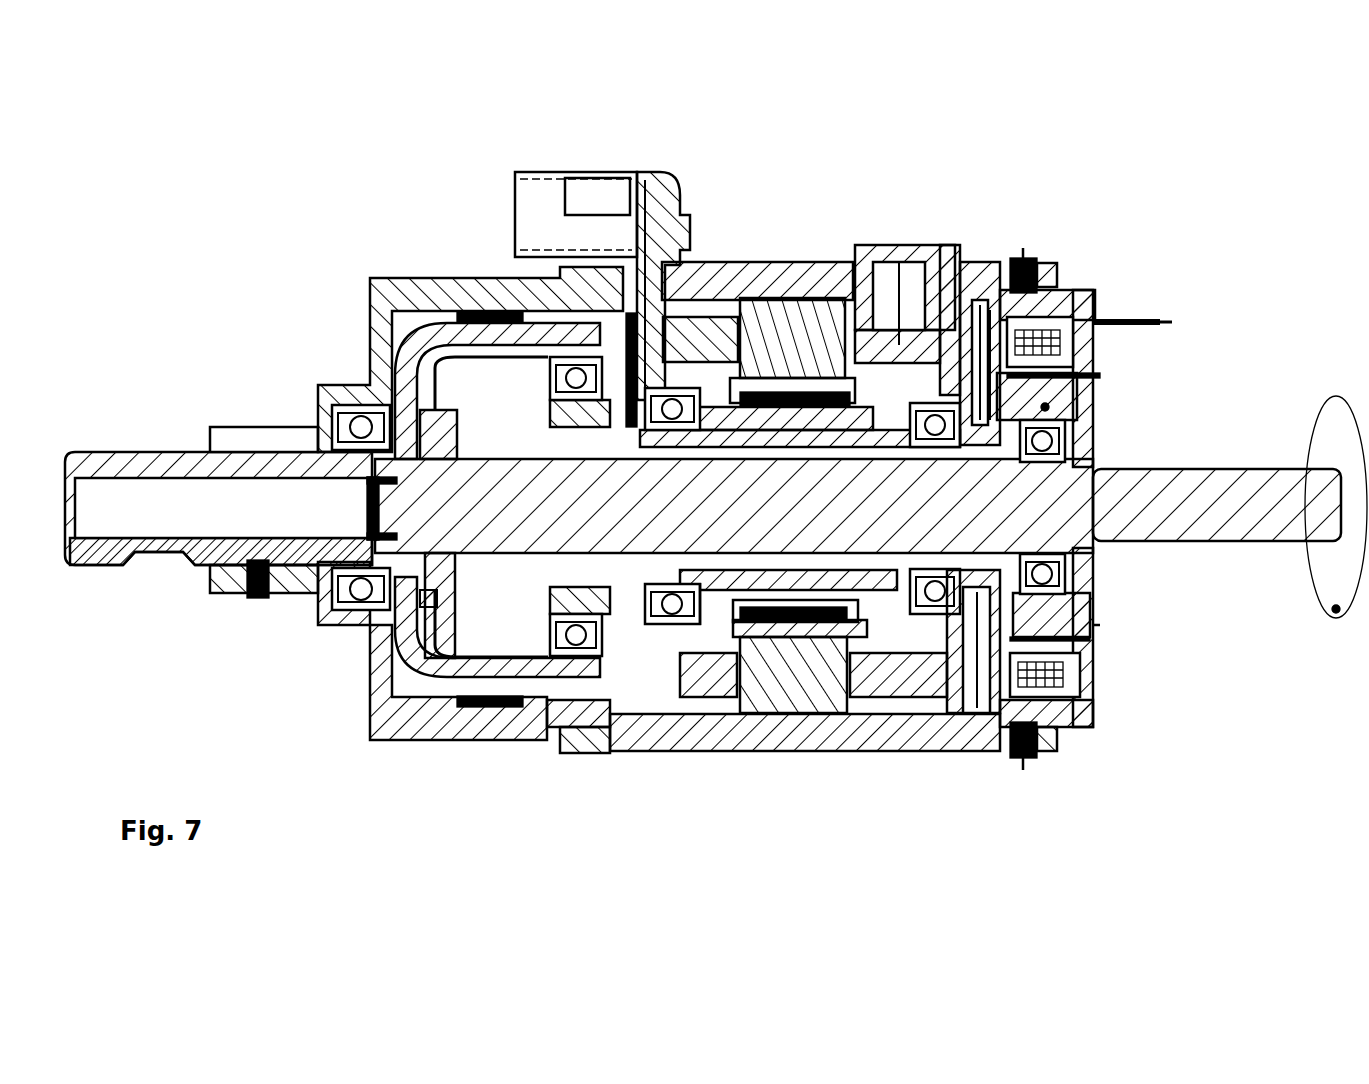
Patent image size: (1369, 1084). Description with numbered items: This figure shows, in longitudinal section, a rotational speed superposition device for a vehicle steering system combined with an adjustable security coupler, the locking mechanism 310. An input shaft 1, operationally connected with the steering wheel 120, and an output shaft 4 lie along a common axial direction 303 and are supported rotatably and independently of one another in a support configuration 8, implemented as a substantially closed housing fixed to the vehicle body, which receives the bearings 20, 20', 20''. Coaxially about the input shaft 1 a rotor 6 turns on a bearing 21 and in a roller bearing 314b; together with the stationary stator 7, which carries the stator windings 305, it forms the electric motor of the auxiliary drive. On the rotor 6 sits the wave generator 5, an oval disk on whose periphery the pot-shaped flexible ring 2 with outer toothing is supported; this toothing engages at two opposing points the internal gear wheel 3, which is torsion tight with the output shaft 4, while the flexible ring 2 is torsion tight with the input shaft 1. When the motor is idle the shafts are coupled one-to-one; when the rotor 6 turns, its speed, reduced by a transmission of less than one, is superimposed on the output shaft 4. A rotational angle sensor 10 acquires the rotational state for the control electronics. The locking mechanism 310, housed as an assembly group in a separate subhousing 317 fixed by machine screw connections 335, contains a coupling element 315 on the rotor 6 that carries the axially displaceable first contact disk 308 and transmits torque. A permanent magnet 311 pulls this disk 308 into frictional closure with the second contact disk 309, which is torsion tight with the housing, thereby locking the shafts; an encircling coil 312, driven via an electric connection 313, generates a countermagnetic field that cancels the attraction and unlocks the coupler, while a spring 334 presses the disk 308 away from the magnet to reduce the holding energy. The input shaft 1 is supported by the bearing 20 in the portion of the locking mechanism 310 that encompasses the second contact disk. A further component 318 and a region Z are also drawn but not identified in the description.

The input shaft 1 is at (1210, 485).
The flexible ring with outer toothing 2 is at (490, 280).
The internal gear wheel 3 is at (540, 685).
The output shaft 4 is at (165, 460).
The wave generator 5 is at (590, 700).
The rotor 6 is at (838, 720).
The stator 7 is at (790, 333).
The support configuration 8 is at (400, 298).
The rotational angle sensor 10 is at (597, 222).
The bearing 20 is at (1166, 720).
The bearing 20' is at (341, 613).
The bearing 20'' is at (396, 697).
The bearing 21 is at (685, 760).
The steering wheel 120 is at (1336, 609).
The axial direction 303 is at (1275, 498).
The stator windings 305 is at (870, 341).
The first contact element 308 is at (975, 690).
The second contact element 309 is at (995, 750).
The locking mechanism 310 is at (947, 242).
The permanent magnet 311 is at (1047, 700).
The coil 312 is at (1045, 600).
The electric connection 313 is at (1165, 320).
The roller bearing 314b is at (935, 620).
The coupling element 315 is at (1050, 440).
The subhousing 317 is at (1010, 690).
The spacer 318 is at (775, 655).
The spring 334 is at (1040, 400).
The machine screw connections 335 is at (1060, 270).
The air gap Z is at (1045, 407).